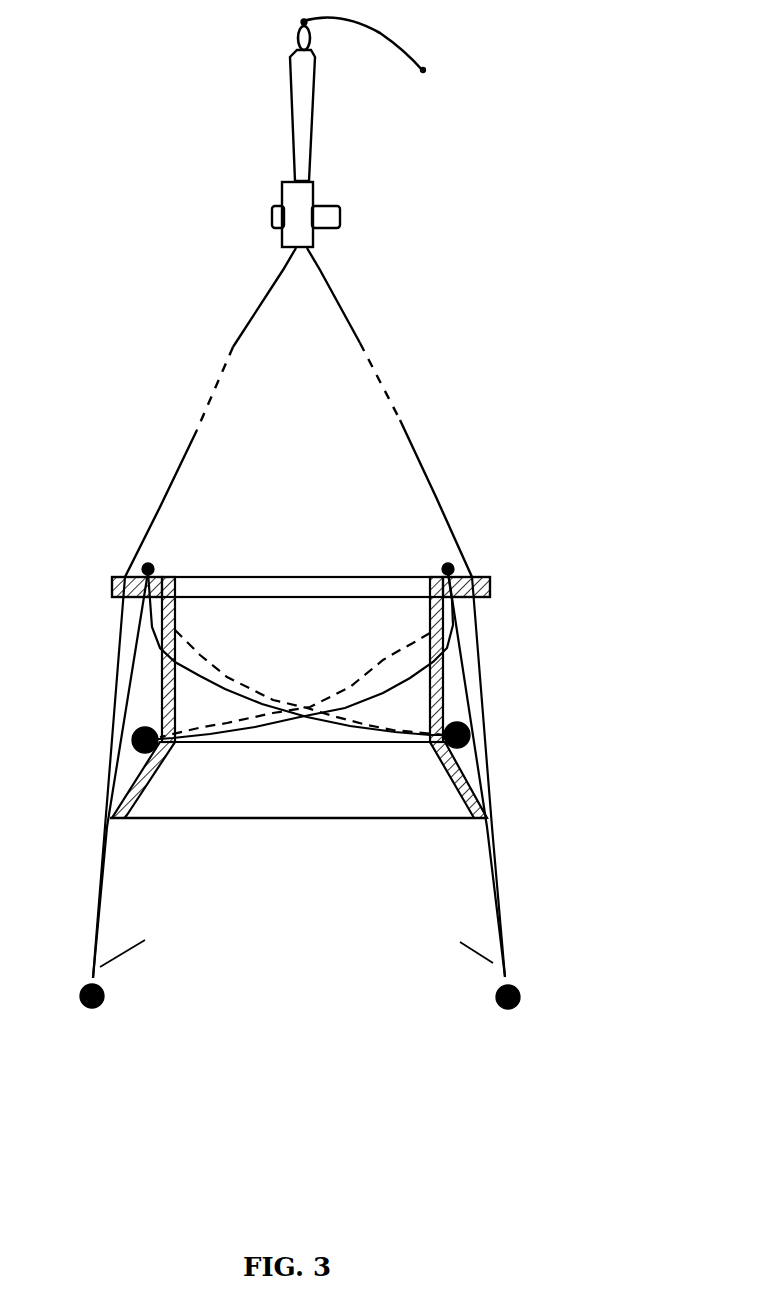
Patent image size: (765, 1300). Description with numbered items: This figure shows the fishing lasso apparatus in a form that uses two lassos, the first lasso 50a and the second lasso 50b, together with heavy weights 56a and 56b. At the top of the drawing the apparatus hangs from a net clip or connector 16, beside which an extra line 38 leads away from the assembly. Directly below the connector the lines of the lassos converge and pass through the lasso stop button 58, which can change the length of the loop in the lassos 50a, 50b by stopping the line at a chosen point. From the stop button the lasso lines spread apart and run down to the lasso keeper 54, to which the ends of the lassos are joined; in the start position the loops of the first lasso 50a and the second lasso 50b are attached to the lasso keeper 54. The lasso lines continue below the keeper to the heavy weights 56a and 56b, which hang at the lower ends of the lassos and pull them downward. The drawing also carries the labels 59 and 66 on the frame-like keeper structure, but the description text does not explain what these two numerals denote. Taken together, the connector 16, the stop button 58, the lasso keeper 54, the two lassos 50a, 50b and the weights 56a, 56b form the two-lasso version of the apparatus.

The net clip or connector 16 is at (300, 22).
The extra line 38 is at (382, 34).
The first lasso 50a is at (313, 103).
The second lasso 50b is at (120, 684).
The lasso keeper 54 is at (273, 820).
The lasso heavy weight 56a is at (132, 741).
The lasso heavy weight 56b is at (104, 990).
The lasso stop button 58 is at (308, 200).
The top frame member 59 is at (320, 577).
The frame 66 is at (242, 618).